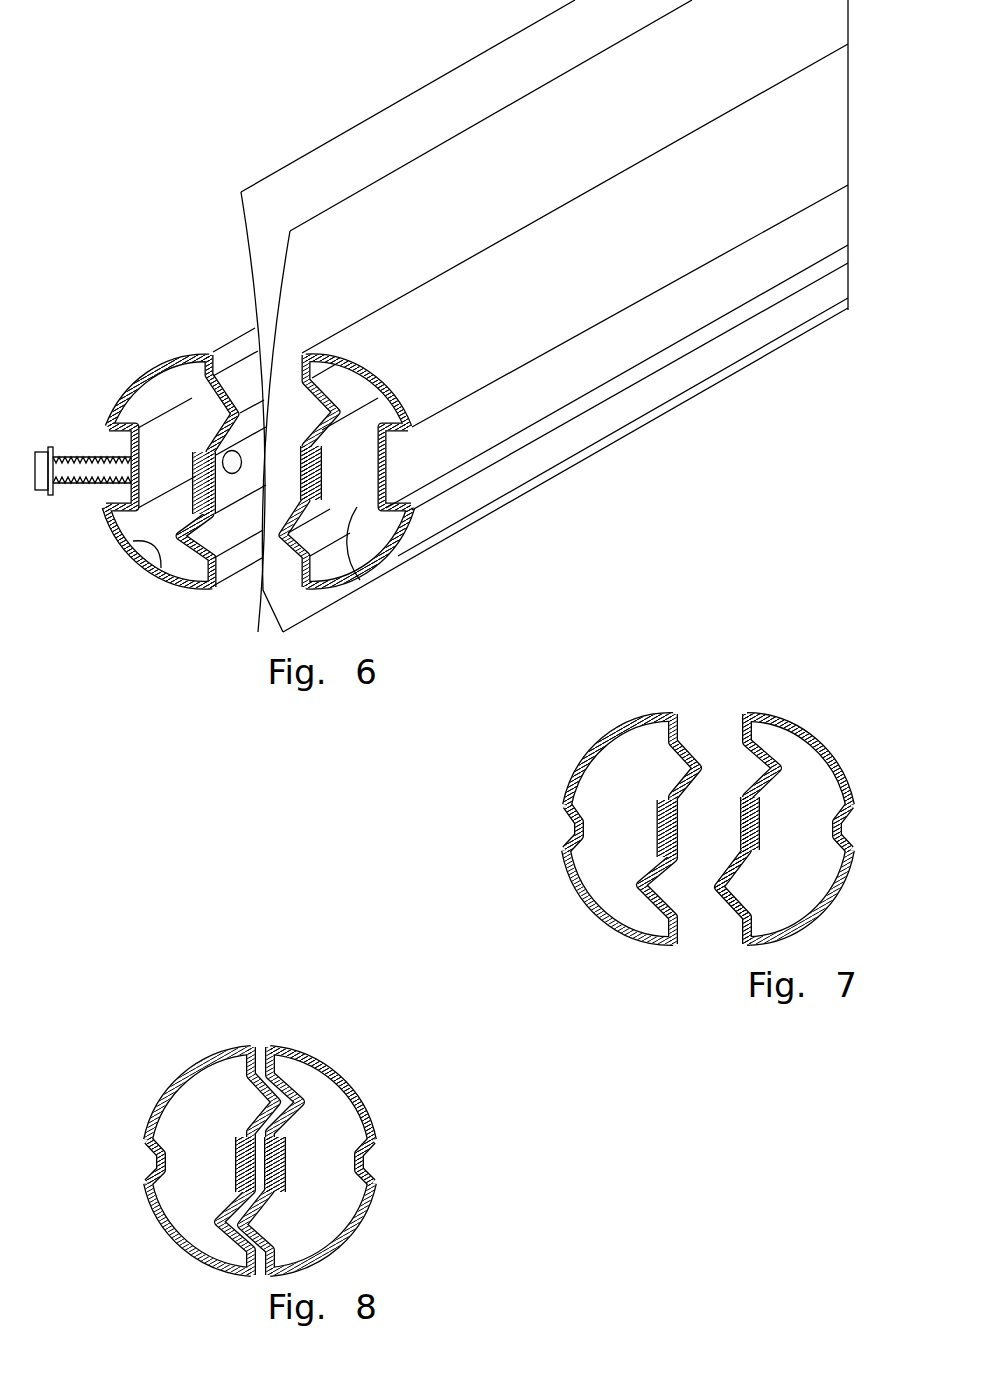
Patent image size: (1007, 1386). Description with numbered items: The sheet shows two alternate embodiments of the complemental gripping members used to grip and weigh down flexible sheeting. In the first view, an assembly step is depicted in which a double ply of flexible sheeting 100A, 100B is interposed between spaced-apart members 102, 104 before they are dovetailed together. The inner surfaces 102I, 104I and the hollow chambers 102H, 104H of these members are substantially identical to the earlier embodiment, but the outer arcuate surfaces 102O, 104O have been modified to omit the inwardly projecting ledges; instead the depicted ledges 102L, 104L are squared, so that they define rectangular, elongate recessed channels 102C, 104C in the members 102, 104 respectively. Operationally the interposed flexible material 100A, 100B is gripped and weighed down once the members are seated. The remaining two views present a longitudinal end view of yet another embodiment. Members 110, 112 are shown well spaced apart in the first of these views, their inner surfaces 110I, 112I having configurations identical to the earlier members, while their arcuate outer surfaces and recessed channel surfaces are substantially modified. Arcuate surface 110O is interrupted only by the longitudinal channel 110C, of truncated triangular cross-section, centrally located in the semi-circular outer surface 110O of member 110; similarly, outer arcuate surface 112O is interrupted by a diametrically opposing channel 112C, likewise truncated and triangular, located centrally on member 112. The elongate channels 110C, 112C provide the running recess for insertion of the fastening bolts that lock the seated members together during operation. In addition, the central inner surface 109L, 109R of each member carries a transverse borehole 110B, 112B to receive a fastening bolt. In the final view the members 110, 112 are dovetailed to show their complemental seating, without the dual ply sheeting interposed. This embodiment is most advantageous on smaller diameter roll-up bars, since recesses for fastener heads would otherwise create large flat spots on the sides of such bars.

In FIG. 6, the flexible sheeting ply 100A is at (250, 185).
In FIG. 6, the flexible sheeting ply 100B is at (365, 185).
In FIG. 6, the gripping member 102 is at (199, 349).
In FIG. 6, the outer arcuate surface 102O is at (141, 382).
In FIG. 6, the inner surface 102I is at (248, 390).
In FIG. 6, the recessed channel 102C is at (127, 453).
In FIG. 6, the ledge 102L is at (118, 497).
In FIG. 6, the hollow chamber 102H is at (160, 582).
In FIG. 6, the gripping member 104 is at (400, 297).
In FIG. 6, the outer arcuate surface 104O is at (387, 382).
In FIG. 6, the inner surface 104I is at (297, 487).
In FIG. 6, the recessed channel 104C is at (383, 487).
In FIG. 6, the ledge 104L is at (413, 502).
In FIG. 6, the hollow chamber 104H is at (350, 573).
In FIG. 7, the gripping member 110 is at (638, 709).
In FIG. 8, the gripping member 110 is at (214, 1042).
In FIG. 7, the arcuate outer surface 110O is at (583, 757).
In FIG. 7, the inner surface 110I is at (680, 808).
In FIG. 7, the longitudinal channel 110C is at (580, 822).
In FIG. 8, the longitudinal channel 110C is at (146, 1152).
In FIG. 7, the transverse borehole 110B is at (665, 815).
In FIG. 8, the transverse borehole 110B is at (235, 1142).
In FIG. 7, the gripping member 112 is at (791, 709).
In FIG. 8, the gripping member 112 is at (311, 1042).
In FIG. 7, the arcuate outer surface 112O is at (838, 757).
In FIG. 8, the arcuate outer surface 112O is at (365, 1092).
In FIG. 7, the inner surface 112I is at (737, 850).
In FIG. 7, the channel 112C is at (833, 825).
In FIG. 8, the channel 112C is at (383, 1152).
In FIG. 7, the transverse borehole 112B is at (757, 817).
In FIG. 8, the transverse borehole 112B is at (283, 1146).
In FIG. 7, the central inner surface 109L is at (657, 853).
In FIG. 7, the central inner surface 109R is at (750, 850).